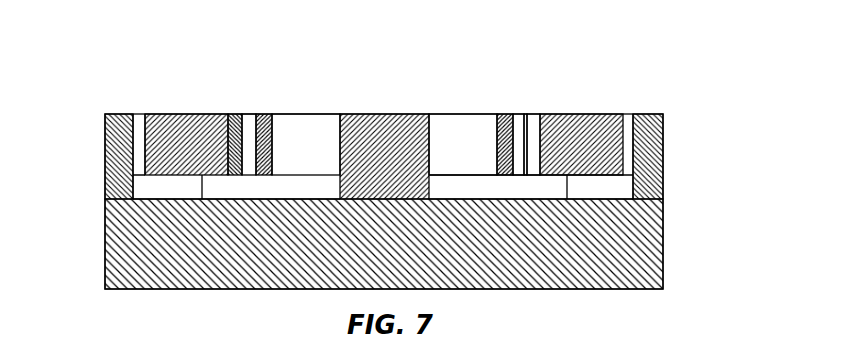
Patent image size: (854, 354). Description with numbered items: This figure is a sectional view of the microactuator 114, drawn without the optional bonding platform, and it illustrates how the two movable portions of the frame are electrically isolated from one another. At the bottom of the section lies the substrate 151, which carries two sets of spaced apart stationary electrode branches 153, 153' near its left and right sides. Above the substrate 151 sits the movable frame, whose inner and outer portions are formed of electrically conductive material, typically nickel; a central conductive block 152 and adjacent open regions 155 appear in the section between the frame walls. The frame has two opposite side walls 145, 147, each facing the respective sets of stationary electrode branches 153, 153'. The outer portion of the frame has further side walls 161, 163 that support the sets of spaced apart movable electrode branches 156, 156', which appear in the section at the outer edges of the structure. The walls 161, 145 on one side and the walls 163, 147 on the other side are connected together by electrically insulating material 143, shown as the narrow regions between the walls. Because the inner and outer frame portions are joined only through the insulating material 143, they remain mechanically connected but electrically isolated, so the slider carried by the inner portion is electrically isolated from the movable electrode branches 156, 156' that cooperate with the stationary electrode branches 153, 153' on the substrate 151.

The microactuator 114 is at (402, 163).
The substrate 151 is at (650, 265).
The central electrode 152 is at (390, 98).
The stationary electrode branches 153 is at (123, 156).
The stationary electrode branches 153' is at (473, 156).
The opening 155 is at (293, 114).
The movable electrode branches 156 is at (133, 142).
The movable electrode branches 156' is at (639, 141).
The side wall 161 is at (233, 114).
The electrically insulating material 143 is at (250, 114).
The side wall 145 is at (260, 114).
The side wall 147 is at (510, 114).
The side wall 163 is at (535, 114).